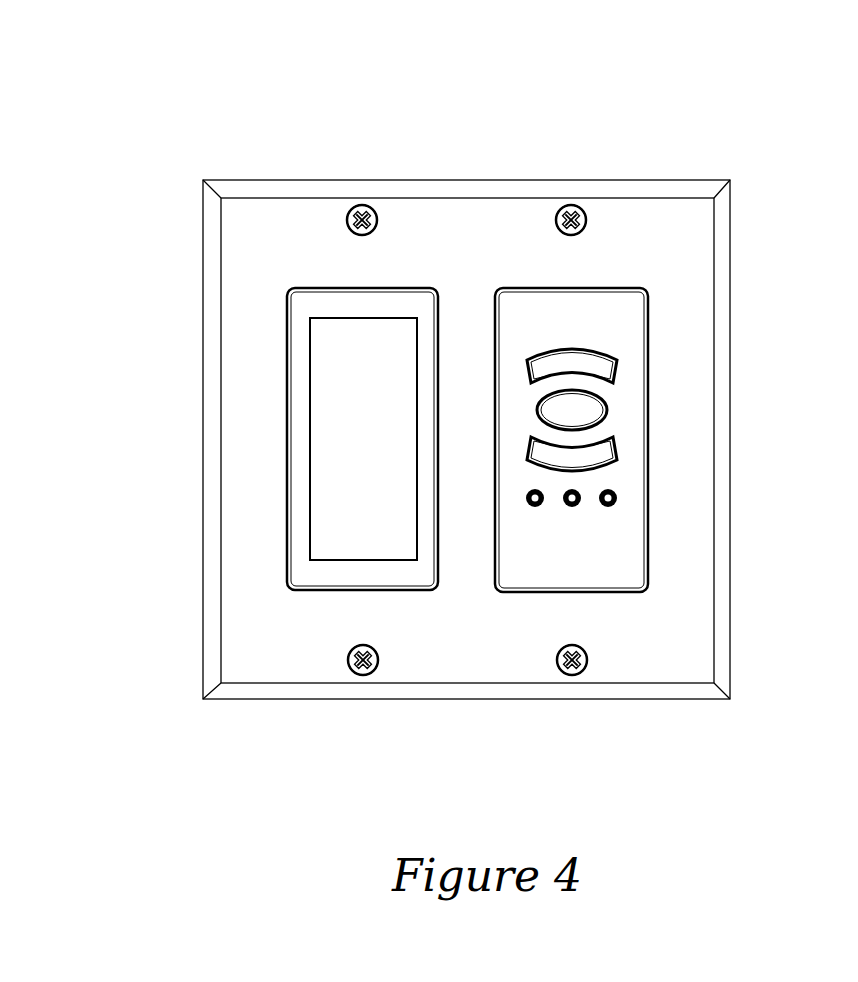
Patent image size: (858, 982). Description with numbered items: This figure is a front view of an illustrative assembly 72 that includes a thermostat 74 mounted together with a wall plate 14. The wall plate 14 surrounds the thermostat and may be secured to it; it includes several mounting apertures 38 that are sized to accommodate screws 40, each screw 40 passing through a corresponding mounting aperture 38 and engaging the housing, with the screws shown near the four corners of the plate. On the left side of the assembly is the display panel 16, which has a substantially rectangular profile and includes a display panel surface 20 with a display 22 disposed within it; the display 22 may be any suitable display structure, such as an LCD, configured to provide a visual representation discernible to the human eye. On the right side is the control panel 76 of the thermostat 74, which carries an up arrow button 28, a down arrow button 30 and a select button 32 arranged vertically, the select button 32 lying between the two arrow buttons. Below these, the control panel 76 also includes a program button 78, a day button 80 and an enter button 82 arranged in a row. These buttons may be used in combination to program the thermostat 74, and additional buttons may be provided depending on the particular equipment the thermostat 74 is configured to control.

The wall plate 14 is at (687, 233).
The display panel 16 is at (285, 439).
The display panel surface 20 is at (307, 572).
The display 22 is at (332, 480).
The up arrow button 28 is at (604, 368).
The down arrow button 30 is at (606, 455).
The select button 32 is at (597, 413).
The mounting aperture 38 is at (354, 207).
The screw 40 is at (364, 205).
The assembly 72 is at (579, 94).
The thermostat 74 is at (656, 487).
The control panel 76 is at (660, 383).
The program button 78 is at (540, 505).
The day button 80 is at (577, 504).
The enter button 82 is at (611, 500).